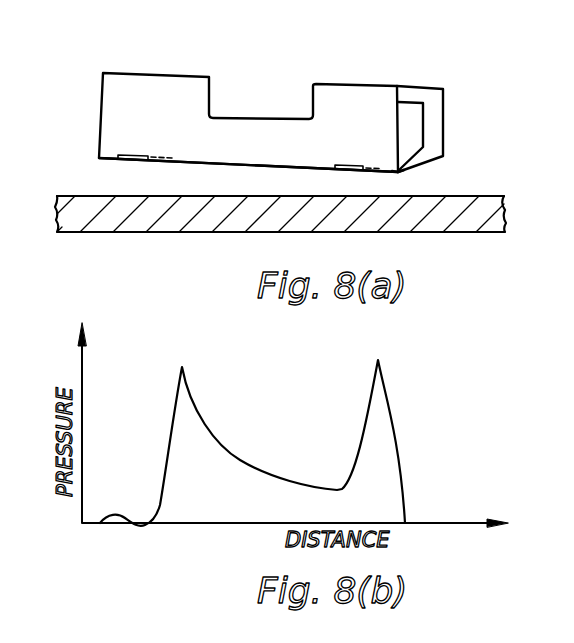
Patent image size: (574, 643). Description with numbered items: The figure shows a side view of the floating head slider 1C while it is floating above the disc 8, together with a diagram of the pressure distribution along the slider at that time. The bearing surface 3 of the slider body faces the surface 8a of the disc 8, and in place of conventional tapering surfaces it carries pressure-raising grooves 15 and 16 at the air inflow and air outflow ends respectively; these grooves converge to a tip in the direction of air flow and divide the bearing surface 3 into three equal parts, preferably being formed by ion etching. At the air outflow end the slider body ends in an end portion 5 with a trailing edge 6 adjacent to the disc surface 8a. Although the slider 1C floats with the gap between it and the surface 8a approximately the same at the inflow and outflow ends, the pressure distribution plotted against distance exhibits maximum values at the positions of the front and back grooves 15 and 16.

The floating head slider 1C is at (183, 90).
The end block 5 is at (435, 118).
The bearing surface 3 is at (205, 165).
The trailing edge 6 is at (400, 173).
The pressure-raising groove 15 is at (133, 155).
The pressure-raising groove 16 is at (347, 165).
The disc 8 is at (263, 233).
The surface of the disc 8a is at (465, 196).